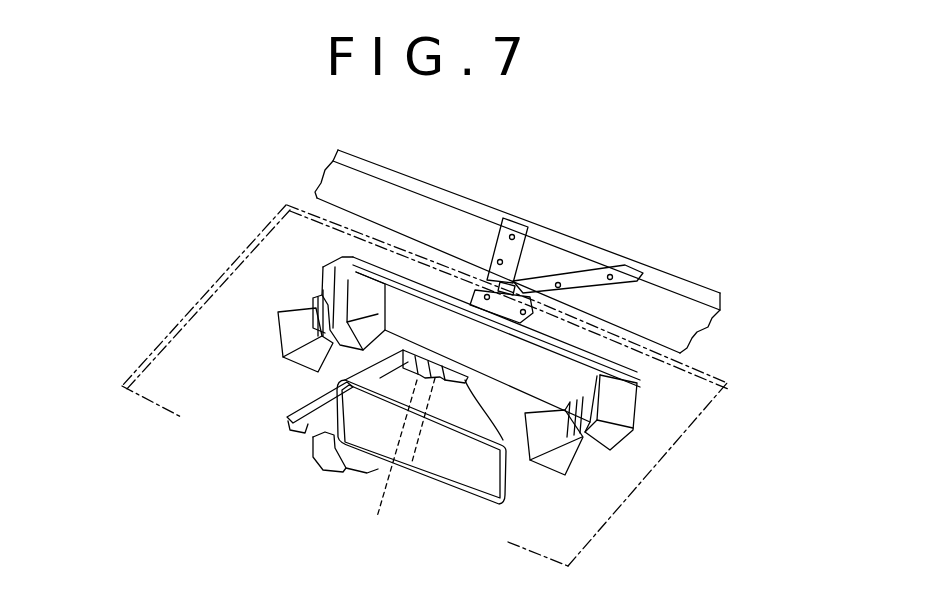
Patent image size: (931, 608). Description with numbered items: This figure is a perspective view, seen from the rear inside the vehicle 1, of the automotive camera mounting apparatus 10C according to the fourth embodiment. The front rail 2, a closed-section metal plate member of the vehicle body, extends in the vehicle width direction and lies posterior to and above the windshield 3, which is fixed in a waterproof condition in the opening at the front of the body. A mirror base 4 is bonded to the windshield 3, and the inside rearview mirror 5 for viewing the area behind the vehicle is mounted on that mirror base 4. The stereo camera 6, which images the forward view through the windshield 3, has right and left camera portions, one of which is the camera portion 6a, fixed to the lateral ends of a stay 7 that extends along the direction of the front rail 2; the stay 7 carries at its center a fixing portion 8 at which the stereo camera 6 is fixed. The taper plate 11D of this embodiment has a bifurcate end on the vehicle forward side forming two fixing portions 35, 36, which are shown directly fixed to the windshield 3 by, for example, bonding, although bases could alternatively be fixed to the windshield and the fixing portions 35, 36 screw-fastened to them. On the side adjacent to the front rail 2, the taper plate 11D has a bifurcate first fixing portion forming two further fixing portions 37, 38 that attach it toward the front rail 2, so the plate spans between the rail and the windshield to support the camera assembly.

The vehicle 1 is at (197, 167).
The front rail 2 is at (695, 293).
The windshield 3 is at (600, 530).
The mirror base 4 is at (310, 457).
The inside rearview mirror 5 is at (447, 497).
The stereo camera 6 is at (650, 418).
The camera portion 6a is at (292, 343).
The stay 7 is at (417, 307).
The fixing portion 8 is at (500, 430).
The roof structure 10C is at (467, 250).
The taper plate 11D is at (313, 400).
The fixing portion 35 is at (287, 414).
The fixing portion 36 is at (393, 463).
The fixing portion 37 is at (515, 228).
The fixing portion 38 is at (592, 277).